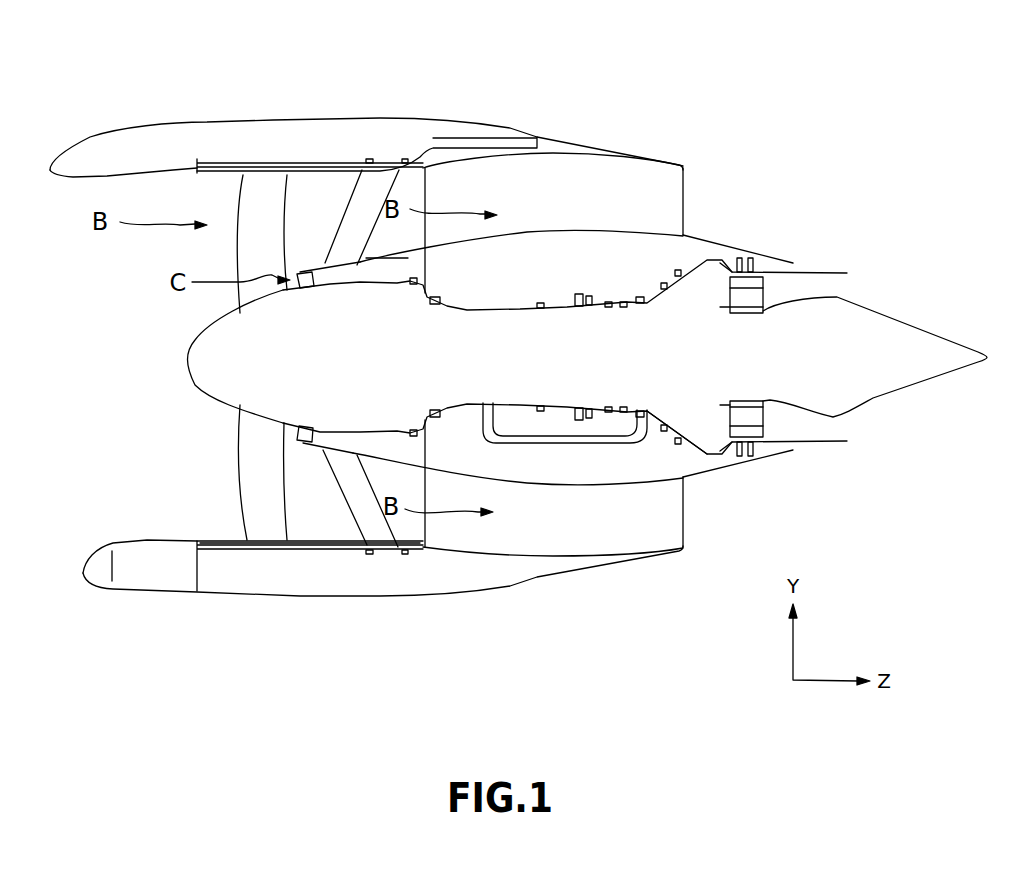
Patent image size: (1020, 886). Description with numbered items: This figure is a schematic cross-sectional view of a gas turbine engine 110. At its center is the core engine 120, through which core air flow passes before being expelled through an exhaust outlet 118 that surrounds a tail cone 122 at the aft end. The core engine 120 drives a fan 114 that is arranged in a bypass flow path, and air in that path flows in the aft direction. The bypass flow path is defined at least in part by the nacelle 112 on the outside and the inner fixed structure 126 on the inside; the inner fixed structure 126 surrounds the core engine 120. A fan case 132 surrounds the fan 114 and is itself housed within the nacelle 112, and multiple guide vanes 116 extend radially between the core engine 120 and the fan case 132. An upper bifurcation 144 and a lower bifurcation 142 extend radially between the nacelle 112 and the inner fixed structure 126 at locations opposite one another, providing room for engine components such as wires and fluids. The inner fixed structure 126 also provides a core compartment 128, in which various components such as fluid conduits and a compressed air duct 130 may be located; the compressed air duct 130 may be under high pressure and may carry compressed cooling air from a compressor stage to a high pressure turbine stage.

The gas turbine engine 110 is at (690, 81).
The nacelle 112 is at (231, 110).
The fan 114 is at (245, 470).
The guide vanes 116 is at (367, 513).
The exhaust outlet 118 is at (840, 288).
The core engine 120 is at (566, 290).
The tail cone 122 is at (878, 386).
The inner fixed structure 126 is at (568, 225).
The core compartment 128 is at (583, 480).
The compressed air duct 130 is at (651, 453).
The fan case 132 is at (224, 553).
The lower bifurcation 142 is at (660, 539).
The upper bifurcation 144 is at (690, 183).